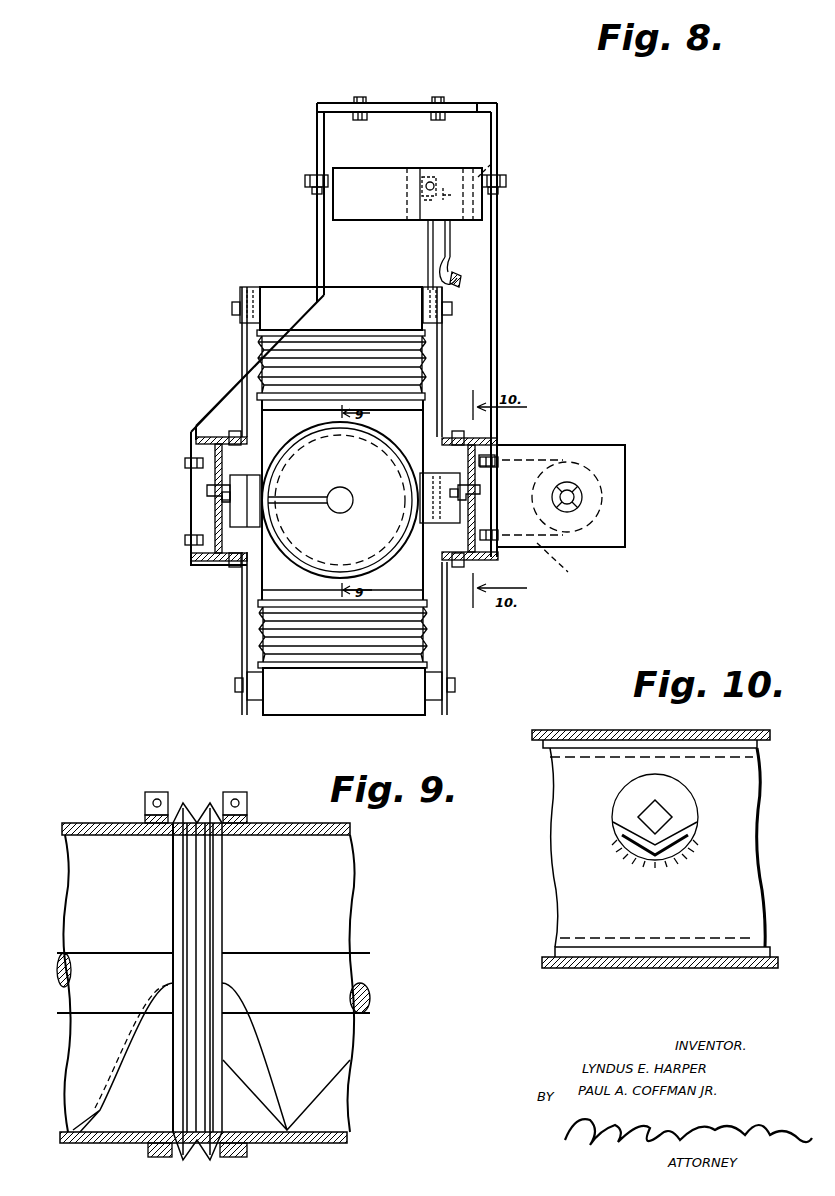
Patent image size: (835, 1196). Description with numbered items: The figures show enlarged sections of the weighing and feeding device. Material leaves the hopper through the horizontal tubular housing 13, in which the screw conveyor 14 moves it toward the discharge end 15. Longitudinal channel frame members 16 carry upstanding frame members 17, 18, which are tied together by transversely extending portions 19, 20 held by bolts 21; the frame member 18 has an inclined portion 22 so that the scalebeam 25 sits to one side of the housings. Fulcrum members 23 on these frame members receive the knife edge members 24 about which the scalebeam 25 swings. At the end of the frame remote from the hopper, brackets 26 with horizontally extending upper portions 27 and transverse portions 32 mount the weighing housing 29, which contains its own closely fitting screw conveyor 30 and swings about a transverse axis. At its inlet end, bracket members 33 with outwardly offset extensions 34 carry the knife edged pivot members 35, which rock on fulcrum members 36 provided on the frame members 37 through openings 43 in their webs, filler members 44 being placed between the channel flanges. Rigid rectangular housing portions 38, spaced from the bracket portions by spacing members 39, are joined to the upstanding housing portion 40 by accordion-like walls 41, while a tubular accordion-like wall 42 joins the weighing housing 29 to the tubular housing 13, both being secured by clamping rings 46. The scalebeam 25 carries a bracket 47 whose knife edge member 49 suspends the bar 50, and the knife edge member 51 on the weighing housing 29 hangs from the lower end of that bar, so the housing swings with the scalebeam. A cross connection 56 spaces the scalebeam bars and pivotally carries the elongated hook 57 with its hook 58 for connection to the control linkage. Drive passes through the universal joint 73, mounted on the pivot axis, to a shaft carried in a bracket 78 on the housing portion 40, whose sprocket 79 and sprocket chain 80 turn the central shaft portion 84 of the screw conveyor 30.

In FIG. 9, the tubular housing 13 is at (90, 823).
In FIG. 9, the screw conveyor 14 is at (105, 1045).
In FIG. 9, the discharge end 15 is at (173, 913).
In FIG. 8, the frame members 16 is at (222, 500).
In FIG. 10, the frame members 16 is at (608, 731).
In FIG. 8, the upstanding frame member 17 is at (498, 388).
In FIG. 8, the upstanding frame member 18 is at (318, 256).
In FIG. 8, the transversely extending portion 19 is at (408, 103).
In FIG. 8, the transversely extending portion 20 is at (478, 105).
In FIG. 8, the bolts 21 is at (362, 97).
In FIG. 8, the inclined portion 22 is at (228, 397).
In FIG. 8, the fulcrum members 23 is at (316, 193).
In FIG. 8, the knife edge members 24 is at (306, 180).
In FIG. 8, the scalebeam 25 is at (486, 183).
In FIG. 8, the brackets 26 is at (242, 352).
In FIG. 8, the upper portions 27 is at (235, 308).
In FIG. 8, the weighing housing 29 is at (365, 578).
In FIG. 9, the weighing housing 29 is at (342, 1134).
In FIG. 8, the screw conveyor 30 is at (303, 527).
In FIG. 9, the screw conveyor 30 is at (318, 1073).
In FIG. 8, the transverse portions 32 is at (200, 440).
In FIG. 8, the bracket members 33 is at (232, 562).
In FIG. 8, the outwardly offset extensions 34 is at (238, 503).
In FIG. 8, the knife edged pivot members 35 is at (212, 490).
In FIG. 10, the knife edged pivot members 35 is at (670, 805).
In FIG. 8, the fulcrum members 36 is at (214, 497).
In FIG. 10, the fulcrum members 36 is at (640, 838).
In FIG. 8, the frame members 37 is at (218, 462).
In FIG. 10, the frame members 37 is at (735, 806).
In FIG. 8, the housing portions 38 is at (372, 302).
In FIG. 8, the spacing members 39 is at (250, 300).
In FIG. 8, the upstanding housing portion 40 is at (273, 412).
In FIG. 8, the accordion-like walls 41 is at (420, 350).
In FIG. 9, the tubular accordion-like wall 42 is at (190, 805).
In FIG. 10, the openings 43 is at (618, 800).
In FIG. 10, the filler members 44 is at (575, 745).
In FIG. 9, the clamping rings 46 is at (147, 794).
In FIG. 8, the bracket 47 is at (366, 176).
In FIG. 8, the knife edge member 49 is at (437, 178).
In FIG. 8, the bar 50 is at (428, 236).
In FIG. 8, the knife edge member 51 is at (417, 437).
In FIG. 8, the cross connection 56 is at (497, 156).
In FIG. 8, the elongated hook 57 is at (451, 240).
In FIG. 8, the hook 58 is at (461, 280).
In FIG. 8, the universal joint 73 is at (578, 494).
In FIG. 8, the bracket 78 is at (612, 460).
In FIG. 8, the sprocket 79 is at (603, 524).
In FIG. 8, the sprocket chain 80 is at (566, 563).
In FIG. 8, the central shaft portion 84 is at (340, 505).
In FIG. 9, the central shaft portion 84 is at (322, 963).